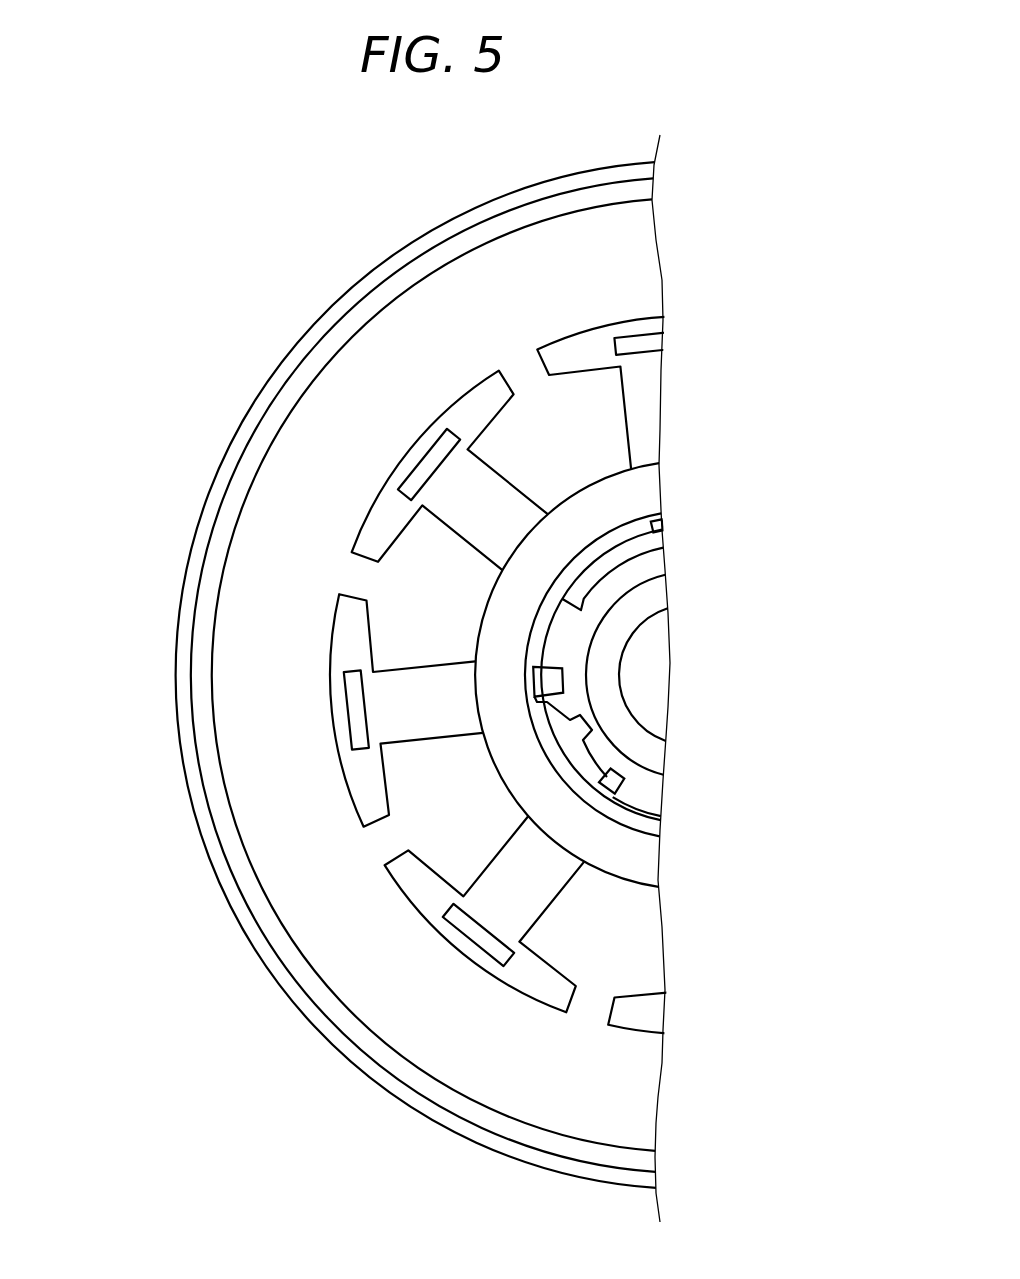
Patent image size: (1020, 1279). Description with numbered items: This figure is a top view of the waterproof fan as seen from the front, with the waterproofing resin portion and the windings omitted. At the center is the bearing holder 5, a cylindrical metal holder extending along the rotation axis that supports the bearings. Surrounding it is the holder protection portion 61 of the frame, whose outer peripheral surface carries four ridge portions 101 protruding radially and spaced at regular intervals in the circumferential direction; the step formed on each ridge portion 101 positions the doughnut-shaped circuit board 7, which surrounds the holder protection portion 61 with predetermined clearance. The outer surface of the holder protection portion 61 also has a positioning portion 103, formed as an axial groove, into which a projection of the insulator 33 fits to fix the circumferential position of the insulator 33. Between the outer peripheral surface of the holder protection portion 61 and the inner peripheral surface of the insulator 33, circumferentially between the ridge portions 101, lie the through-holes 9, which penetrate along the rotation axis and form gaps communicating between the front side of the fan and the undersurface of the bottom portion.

The bearing holder 5 is at (650, 596).
The circuit board 7 is at (340, 378).
The through-holes 9 is at (583, 592).
The insulator 33 is at (507, 503).
The holder protection portion 61 is at (653, 566).
The ridge portions 101 is at (560, 642).
The positioning portion 103 is at (587, 730).